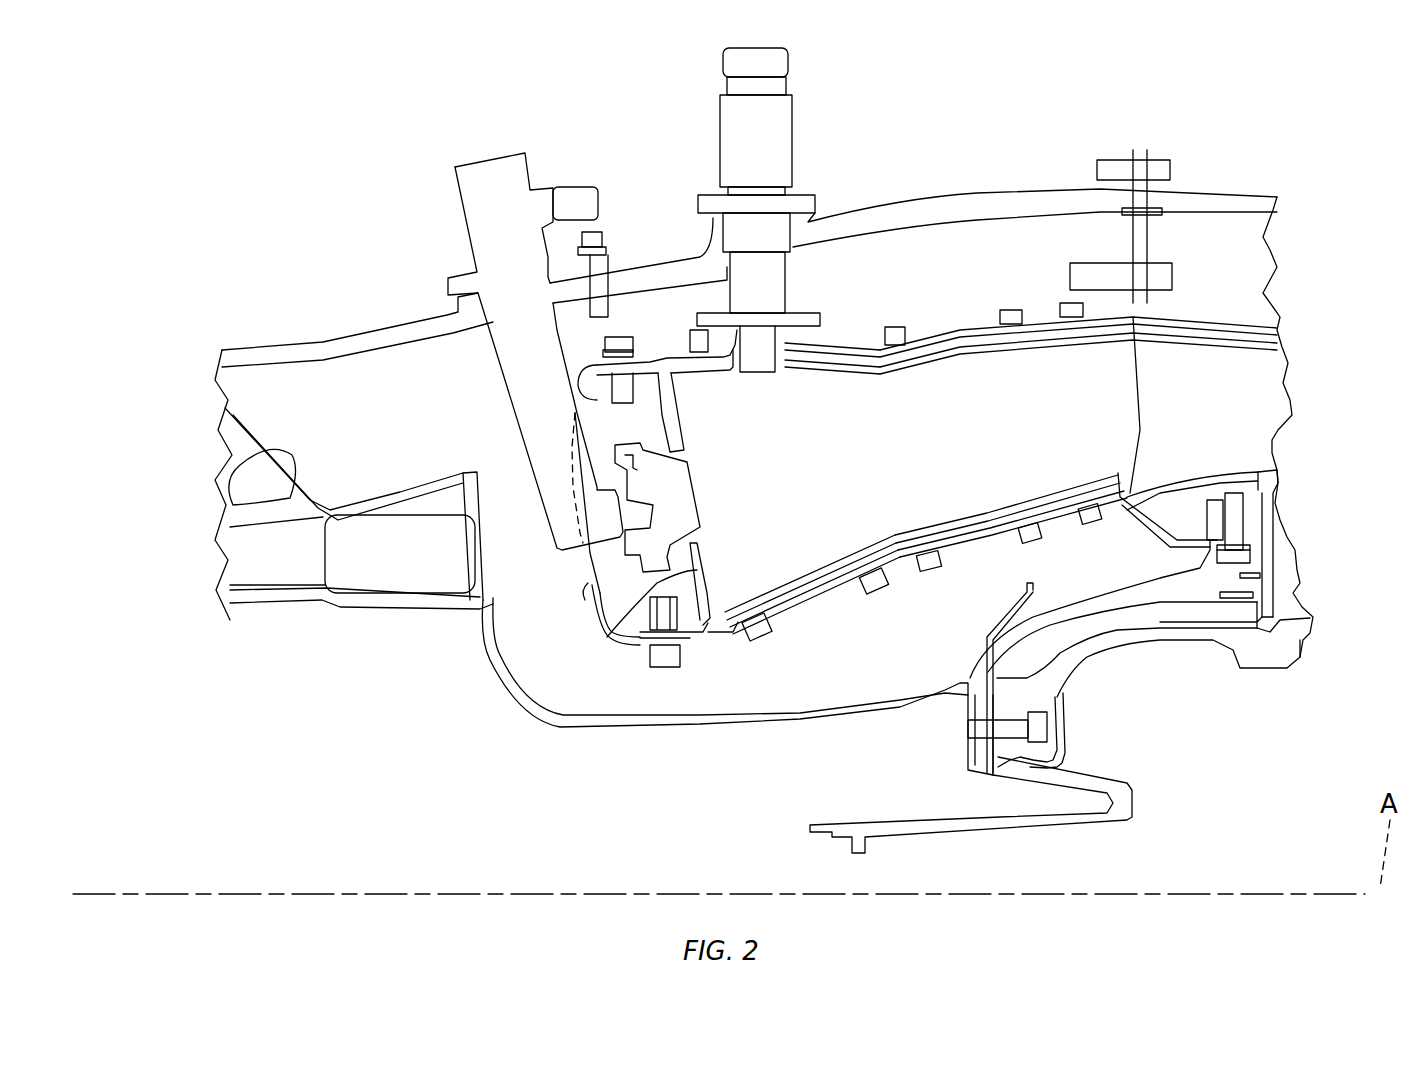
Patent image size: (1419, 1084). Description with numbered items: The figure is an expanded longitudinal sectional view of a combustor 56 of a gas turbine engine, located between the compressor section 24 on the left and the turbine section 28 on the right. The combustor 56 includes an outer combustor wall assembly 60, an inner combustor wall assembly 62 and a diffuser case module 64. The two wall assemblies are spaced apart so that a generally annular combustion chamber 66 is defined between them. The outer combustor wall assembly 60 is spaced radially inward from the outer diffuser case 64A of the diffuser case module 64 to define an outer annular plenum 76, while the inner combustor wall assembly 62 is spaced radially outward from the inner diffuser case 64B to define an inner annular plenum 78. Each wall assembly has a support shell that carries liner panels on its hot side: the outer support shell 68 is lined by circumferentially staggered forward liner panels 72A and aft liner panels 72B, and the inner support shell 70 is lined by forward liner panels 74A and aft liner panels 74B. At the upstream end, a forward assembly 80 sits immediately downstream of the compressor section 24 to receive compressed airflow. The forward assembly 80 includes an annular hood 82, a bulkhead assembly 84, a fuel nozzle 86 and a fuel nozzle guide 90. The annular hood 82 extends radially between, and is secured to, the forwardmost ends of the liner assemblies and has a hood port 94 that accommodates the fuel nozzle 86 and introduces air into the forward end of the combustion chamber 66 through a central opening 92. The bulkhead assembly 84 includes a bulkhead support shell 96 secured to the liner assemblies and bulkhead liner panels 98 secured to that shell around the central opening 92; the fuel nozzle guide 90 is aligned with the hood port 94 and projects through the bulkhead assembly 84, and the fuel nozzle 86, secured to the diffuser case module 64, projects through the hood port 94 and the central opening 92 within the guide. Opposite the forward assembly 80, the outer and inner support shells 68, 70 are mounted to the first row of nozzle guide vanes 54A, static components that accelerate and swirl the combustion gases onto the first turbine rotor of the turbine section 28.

The compressor section 24 is at (380, 543).
The turbine section 28 is at (1394, 410).
The first row of Nozzle Guide Vanes 54A is at (1215, 418).
The combustor 56 is at (1115, 118).
The outer combustor wall assembly 60 is at (973, 327).
The inner combustor wall assembly 62 is at (903, 580).
The diffuser case module 64 is at (962, 193).
The outer diffuser case 64A is at (880, 210).
The inner diffuser case 64B is at (792, 727).
The combustion chamber 66 is at (926, 462).
The outer support shell 68 is at (925, 330).
The inner support shell 70 is at (993, 534).
The forward liner panels 72A is at (805, 368).
The aft liner panels 72B is at (990, 347).
The forward liner panels 74A is at (853, 563).
The aft liner panels 74B is at (1010, 502).
The outer annular plenum 76 is at (874, 280).
The inner annular plenum 78 is at (835, 682).
The forward assembly 80 is at (610, 648).
The annular hood 82 is at (603, 613).
The bulkhead assembly 84 is at (690, 440).
The fuel nozzle 86 is at (527, 265).
The fuel nozzle guide 90 is at (700, 540).
The central opening 92 is at (680, 490).
The hood port 94 is at (603, 583).
The bulkhead support shell 96 is at (617, 640).
The bulkhead liner panels 98 is at (710, 577).